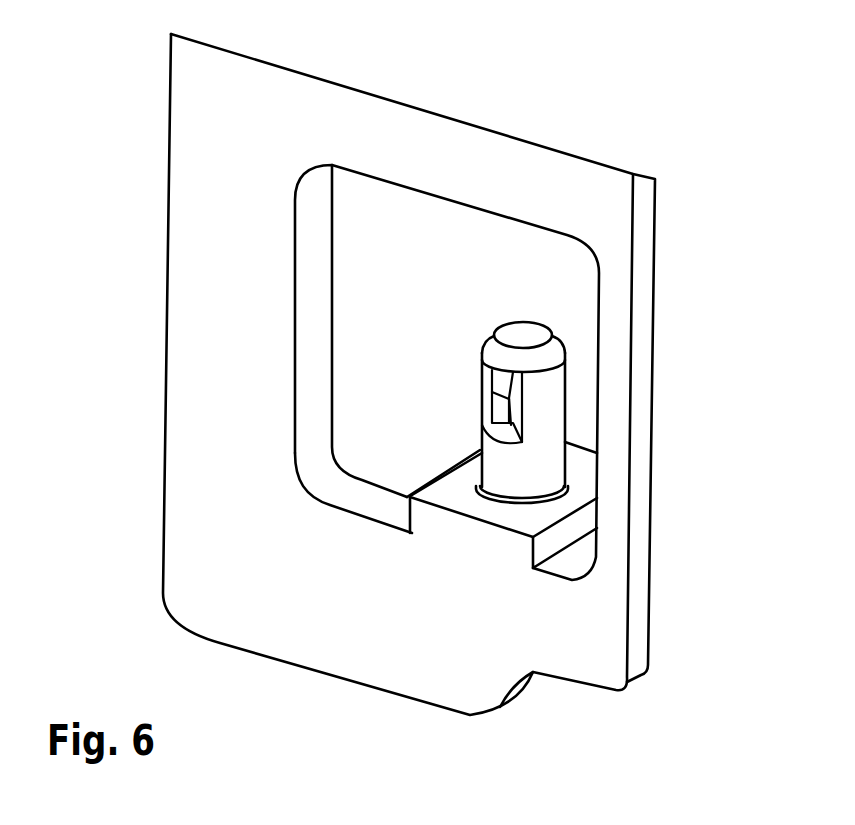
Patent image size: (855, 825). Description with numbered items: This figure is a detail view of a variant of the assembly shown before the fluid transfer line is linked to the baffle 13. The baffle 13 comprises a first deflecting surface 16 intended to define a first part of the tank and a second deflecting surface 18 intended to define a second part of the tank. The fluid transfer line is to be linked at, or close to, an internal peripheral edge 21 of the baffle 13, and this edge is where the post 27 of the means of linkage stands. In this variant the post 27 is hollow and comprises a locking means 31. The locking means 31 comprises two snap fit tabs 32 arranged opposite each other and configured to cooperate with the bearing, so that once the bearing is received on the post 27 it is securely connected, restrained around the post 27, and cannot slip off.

The baffle 13 is at (190, 462).
The first deflecting surface 16 is at (297, 290).
The second deflecting surface 18 is at (330, 303).
The internal peripheral edge 21 is at (518, 515).
The post 27 is at (520, 463).
The locking means 31 is at (480, 398).
The snap fit tabs 32 is at (505, 382).